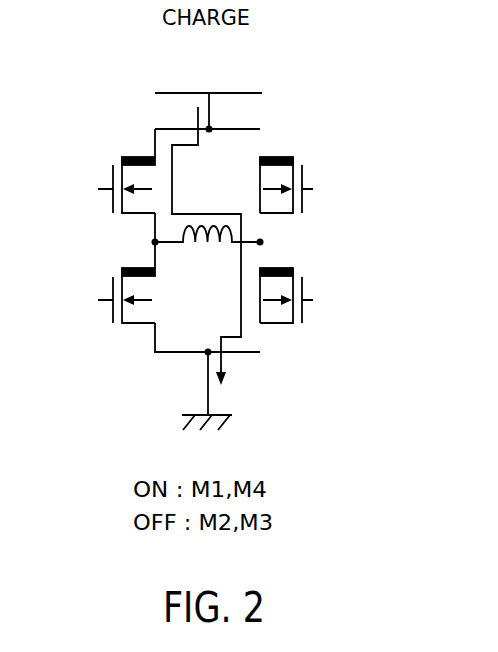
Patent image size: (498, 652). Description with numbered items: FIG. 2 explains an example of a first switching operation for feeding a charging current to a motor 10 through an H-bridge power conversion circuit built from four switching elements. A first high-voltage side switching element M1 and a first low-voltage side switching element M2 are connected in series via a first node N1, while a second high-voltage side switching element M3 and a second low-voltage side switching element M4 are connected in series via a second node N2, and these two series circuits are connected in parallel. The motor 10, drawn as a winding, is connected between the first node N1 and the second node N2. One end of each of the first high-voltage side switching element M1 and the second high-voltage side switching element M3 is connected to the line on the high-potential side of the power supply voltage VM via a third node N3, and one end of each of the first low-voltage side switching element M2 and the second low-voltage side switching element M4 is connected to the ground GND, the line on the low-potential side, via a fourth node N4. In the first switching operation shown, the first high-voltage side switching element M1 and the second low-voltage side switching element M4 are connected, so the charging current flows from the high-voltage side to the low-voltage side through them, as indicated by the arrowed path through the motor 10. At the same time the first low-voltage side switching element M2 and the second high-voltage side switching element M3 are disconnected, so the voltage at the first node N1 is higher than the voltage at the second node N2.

The motor 10 is at (205, 250).
The first high-voltage side switching element M1 is at (115, 155).
The first low-voltage side switching element M2 is at (115, 328).
The second high-voltage side switching element M3 is at (298, 155).
The second low-voltage side switching element M4 is at (298, 328).
The first node N1 is at (154, 242).
The second node N2 is at (261, 242).
The third node N3 is at (210, 129).
The fourth node N4 is at (207, 354).
The power supply voltage VM is at (223, 92).
The ground GND is at (231, 398).